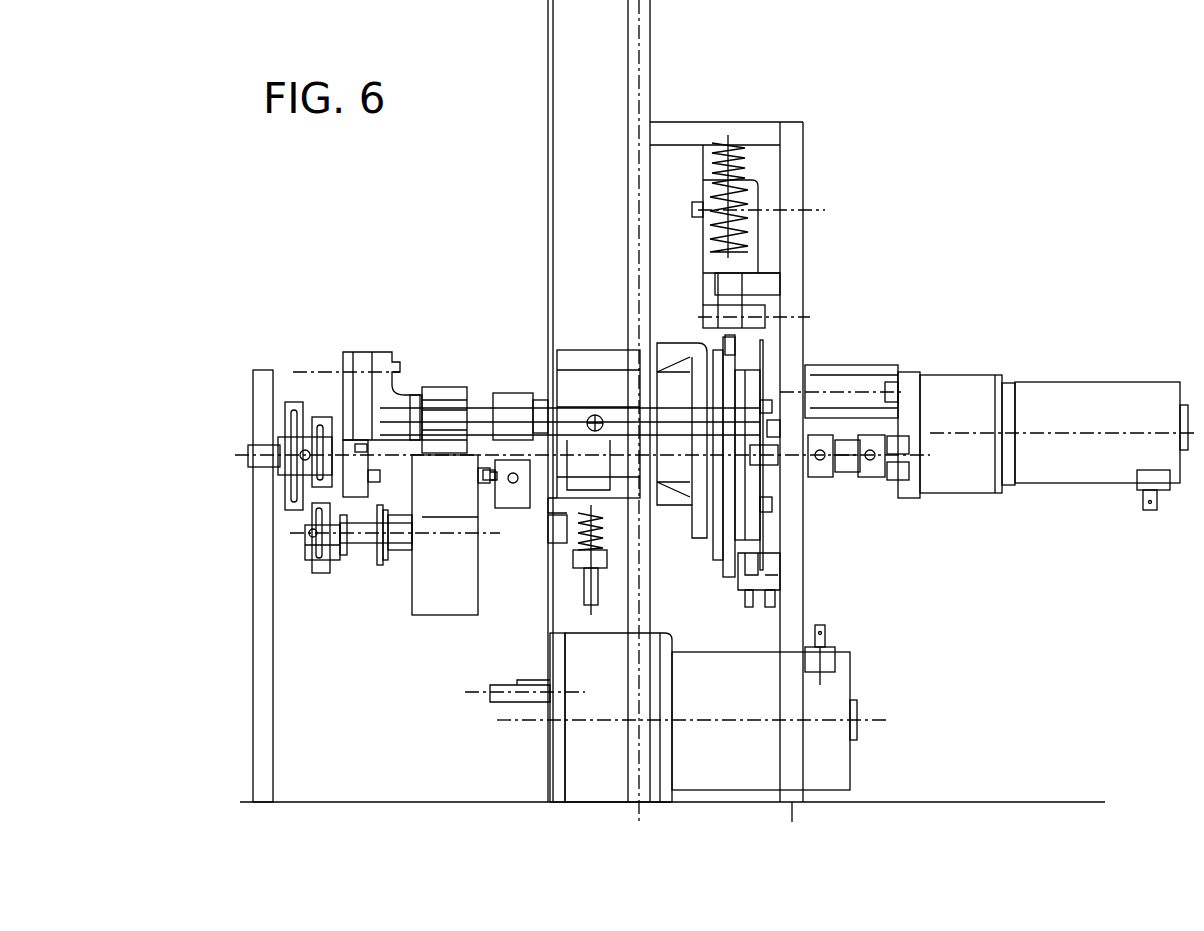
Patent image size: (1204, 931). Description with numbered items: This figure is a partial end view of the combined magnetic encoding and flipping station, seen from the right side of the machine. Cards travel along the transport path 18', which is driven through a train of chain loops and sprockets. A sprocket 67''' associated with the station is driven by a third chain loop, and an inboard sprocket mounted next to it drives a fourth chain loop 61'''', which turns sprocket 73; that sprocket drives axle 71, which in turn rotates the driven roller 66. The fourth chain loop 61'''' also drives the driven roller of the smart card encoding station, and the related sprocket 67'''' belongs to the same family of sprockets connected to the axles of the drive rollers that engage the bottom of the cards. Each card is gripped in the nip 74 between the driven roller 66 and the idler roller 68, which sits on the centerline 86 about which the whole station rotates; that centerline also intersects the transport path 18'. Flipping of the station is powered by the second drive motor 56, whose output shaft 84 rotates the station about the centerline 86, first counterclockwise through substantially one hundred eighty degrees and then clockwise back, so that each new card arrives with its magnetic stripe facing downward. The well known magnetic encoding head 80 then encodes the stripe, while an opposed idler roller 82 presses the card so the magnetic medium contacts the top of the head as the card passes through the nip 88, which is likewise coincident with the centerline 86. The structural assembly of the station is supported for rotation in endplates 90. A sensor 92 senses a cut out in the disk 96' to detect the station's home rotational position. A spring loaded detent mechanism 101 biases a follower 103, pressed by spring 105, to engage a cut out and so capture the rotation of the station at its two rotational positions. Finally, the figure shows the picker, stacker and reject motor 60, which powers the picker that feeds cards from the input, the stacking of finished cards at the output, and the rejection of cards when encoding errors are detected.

The spring loaded detent mechanism 101 is at (760, 124).
The spring 105 is at (745, 162).
The follower 103 is at (740, 292).
The disk 96' is at (794, 449).
The second drive motor 56 is at (1050, 385).
The output shaft 84 is at (805, 470).
The endplates 90 is at (253, 680).
The sensor 92 is at (738, 587).
The picker, stacker and reject motor 60 is at (855, 678).
The driven roller 66 is at (438, 620).
The axle 71 is at (370, 545).
The sprocket 73 is at (322, 573).
The fourth chain loop 61'''' is at (242, 540).
The sprocket 67''' is at (243, 456).
The sprocket 67'''' is at (336, 396).
The centerline 86 is at (420, 410).
The transport path 18' is at (373, 395).
The idler roller 68 is at (445, 387).
The nip 74 is at (455, 453).
The idler roller 82 is at (512, 393).
The magnetic encoding head 80 is at (508, 490).
The nip 88 is at (533, 460).